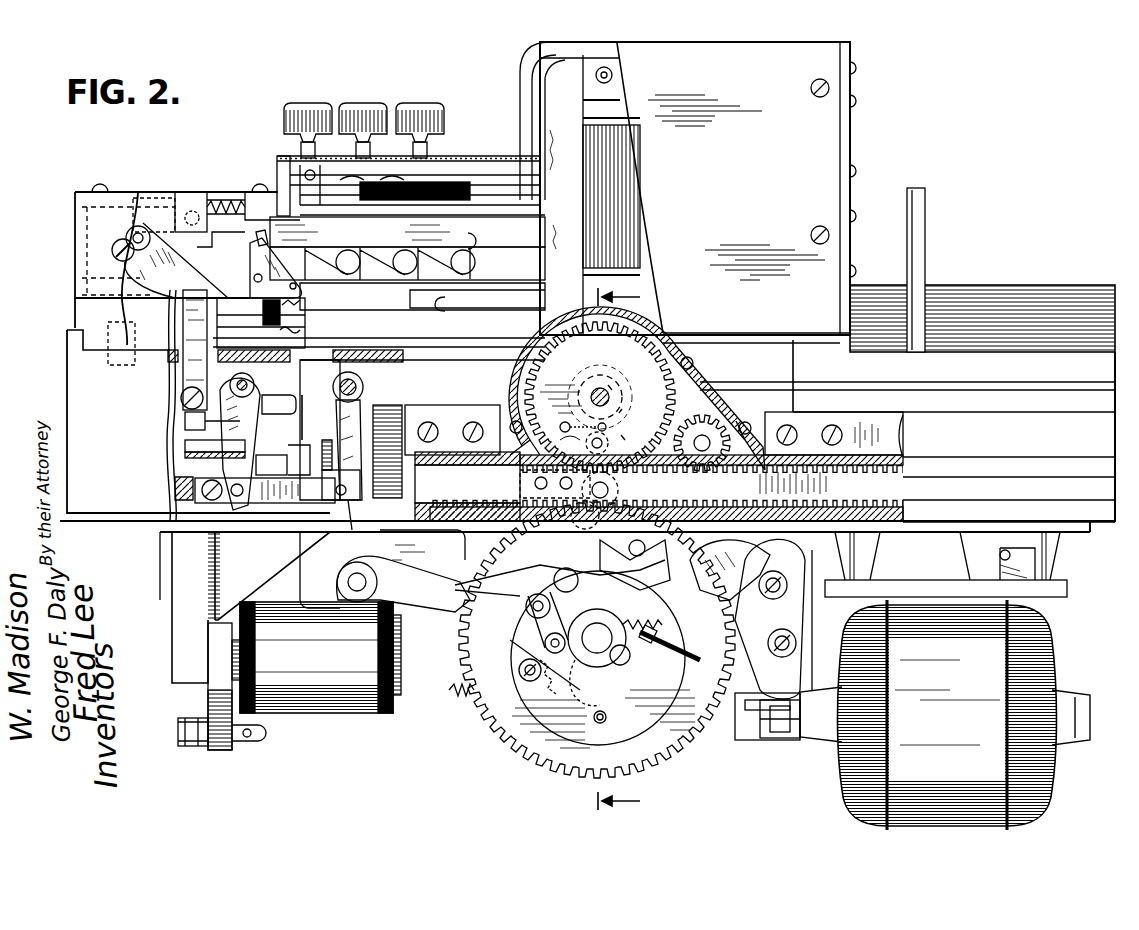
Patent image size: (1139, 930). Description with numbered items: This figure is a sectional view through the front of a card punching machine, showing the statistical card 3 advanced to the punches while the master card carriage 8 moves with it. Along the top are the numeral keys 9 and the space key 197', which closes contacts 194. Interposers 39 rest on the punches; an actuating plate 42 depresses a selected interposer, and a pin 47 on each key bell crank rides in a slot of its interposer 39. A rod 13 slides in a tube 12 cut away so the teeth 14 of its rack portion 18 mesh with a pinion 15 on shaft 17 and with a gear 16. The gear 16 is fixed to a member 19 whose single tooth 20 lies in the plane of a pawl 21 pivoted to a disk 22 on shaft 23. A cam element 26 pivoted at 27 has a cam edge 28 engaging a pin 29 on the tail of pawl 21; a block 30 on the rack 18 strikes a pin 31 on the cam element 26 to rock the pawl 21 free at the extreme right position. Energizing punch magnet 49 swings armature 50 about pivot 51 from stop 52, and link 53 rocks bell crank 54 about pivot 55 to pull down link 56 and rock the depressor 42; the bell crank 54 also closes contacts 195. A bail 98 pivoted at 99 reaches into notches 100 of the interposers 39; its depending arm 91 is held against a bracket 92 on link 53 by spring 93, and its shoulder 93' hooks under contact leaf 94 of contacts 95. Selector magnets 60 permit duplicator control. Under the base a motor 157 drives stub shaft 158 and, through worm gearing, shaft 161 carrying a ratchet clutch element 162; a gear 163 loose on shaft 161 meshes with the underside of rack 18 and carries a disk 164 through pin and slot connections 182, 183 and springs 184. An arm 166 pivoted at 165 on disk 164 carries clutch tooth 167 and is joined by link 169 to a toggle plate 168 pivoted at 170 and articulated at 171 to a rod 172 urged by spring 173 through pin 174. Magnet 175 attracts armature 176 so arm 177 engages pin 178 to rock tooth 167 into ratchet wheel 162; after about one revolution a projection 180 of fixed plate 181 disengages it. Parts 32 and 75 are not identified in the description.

The statistical card 3 is at (962, 300).
The carriage 8 is at (609, 550).
The numeral keys 9 is at (404, 110).
The tube 12 is at (1030, 462).
The rod 13 is at (1098, 500).
The teeth 14 is at (785, 468).
The pinion 15 is at (736, 421).
The gear 16 is at (650, 356).
The shaft 17 is at (704, 440).
The rack portion 18 is at (870, 476).
The member 19 is at (612, 390).
The single tooth 20 is at (622, 409).
The pawl 21 is at (625, 440).
The disk 22 is at (572, 392).
The shaft 23 is at (600, 392).
The cam element 26 is at (600, 508).
The pivot 27 is at (640, 536).
The cam edge 28 is at (603, 440).
The pin 29 is at (467, 486).
The block 30 is at (540, 484).
The pin 31 is at (586, 488).
The ratchet 32 is at (579, 417).
The interposers 39 is at (407, 248).
The actuating plate 42 is at (156, 208).
The pin 47 is at (478, 240).
The punch magnet 49 is at (396, 430).
The armature 50 is at (358, 522).
The pivot 51 is at (364, 380).
The stop 52 is at (315, 453).
The link 53 is at (300, 500).
The bell crank 54 is at (230, 453).
The pivot 55 is at (183, 394).
The link 56 is at (195, 338).
The selector magnets 60 is at (688, 188).
The lever 75 is at (380, 396).
The depending arm 91 is at (310, 340).
The bracket 92 is at (292, 468).
The spring 93 is at (261, 323).
The shoulder 93' is at (278, 417).
The contact leaf 94 is at (360, 420).
The contacts 95 is at (190, 446).
The bail 98 is at (248, 262).
The pivot 99 is at (203, 298).
The notches 100 is at (260, 240).
The motor 157 is at (945, 681).
The stub shaft 158 is at (776, 740).
The shaft 161 is at (650, 700).
The ratchet shaped clutch element 162 is at (495, 685).
The gear 163 is at (675, 740).
The disk 164 is at (560, 740).
The pivot 165 is at (692, 540).
The arm 166 is at (545, 600).
The clutch tooth 167 is at (605, 560).
The toggle plate 168 is at (595, 683).
The link 169 is at (540, 630).
The pivot 170 is at (520, 668).
The articulation 171 is at (616, 648).
The rod 172 is at (690, 660).
The spring 173 is at (767, 709).
The pin 174 is at (670, 645).
The magnet 175 is at (320, 657).
The armature 176 is at (418, 678).
The arm 177 is at (405, 572).
The pin 178 is at (535, 585).
The projection 180 is at (730, 568).
The fixed plate 181 is at (788, 576).
The pin and slot connection 182 is at (565, 576).
The pin and slot connection 183 is at (562, 510).
The springs 184 is at (660, 610).
The contacts 194 is at (300, 183).
The contacts 195 is at (190, 430).
The space key 197' is at (324, 113).